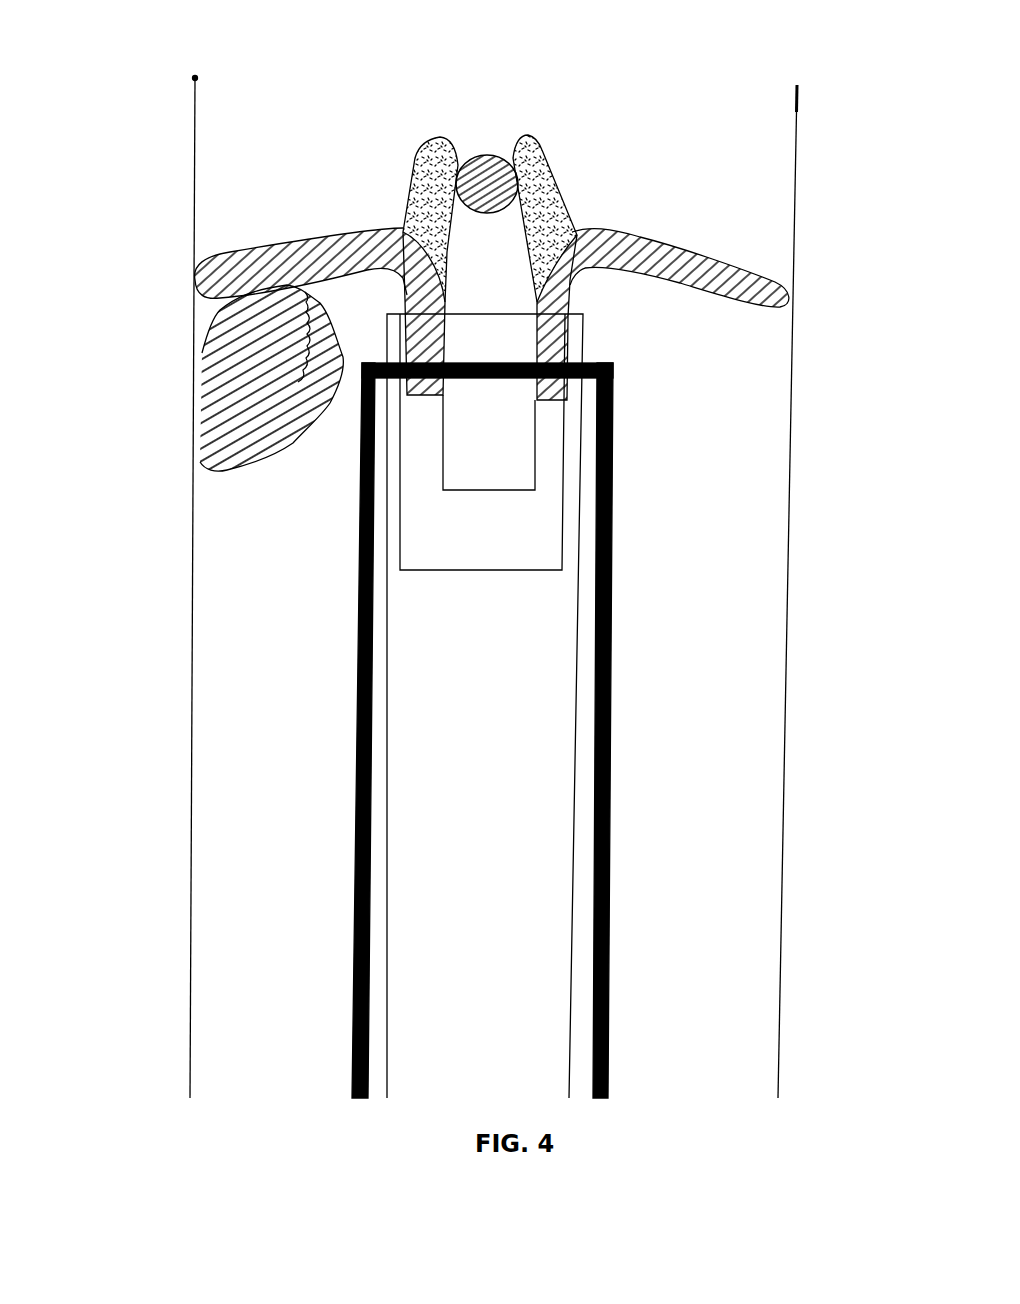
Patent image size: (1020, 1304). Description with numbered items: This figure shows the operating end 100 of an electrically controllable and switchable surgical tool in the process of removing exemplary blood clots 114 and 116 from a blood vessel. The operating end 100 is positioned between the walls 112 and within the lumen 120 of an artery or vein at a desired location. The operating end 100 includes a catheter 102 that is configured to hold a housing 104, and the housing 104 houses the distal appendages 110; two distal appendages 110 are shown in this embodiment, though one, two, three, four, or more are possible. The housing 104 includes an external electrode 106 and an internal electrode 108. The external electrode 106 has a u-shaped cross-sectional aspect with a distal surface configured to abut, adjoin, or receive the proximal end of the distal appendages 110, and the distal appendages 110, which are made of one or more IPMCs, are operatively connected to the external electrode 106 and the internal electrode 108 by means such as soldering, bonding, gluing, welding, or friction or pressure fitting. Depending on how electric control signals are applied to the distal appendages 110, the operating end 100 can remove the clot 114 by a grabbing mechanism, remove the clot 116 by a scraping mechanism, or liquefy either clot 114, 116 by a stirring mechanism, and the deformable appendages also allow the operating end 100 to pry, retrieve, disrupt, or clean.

The operating end 100 is at (778, 77).
The catheter 102 is at (612, 723).
The housing 104 is at (575, 343).
The external electrode 106 is at (522, 540).
The internal electrode 108 is at (473, 472).
The distal appendages 110 is at (657, 238).
The walls 112 is at (787, 702).
The blood clot 114 is at (533, 83).
The blood clot 116 is at (233, 403).
The lumen 120 is at (283, 780).